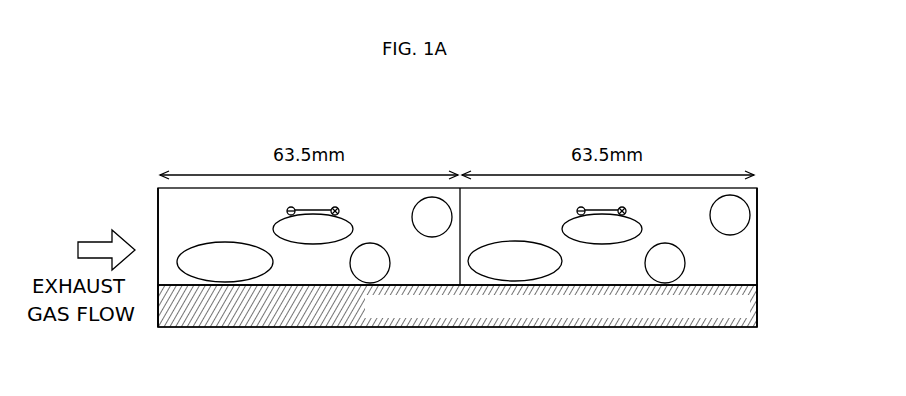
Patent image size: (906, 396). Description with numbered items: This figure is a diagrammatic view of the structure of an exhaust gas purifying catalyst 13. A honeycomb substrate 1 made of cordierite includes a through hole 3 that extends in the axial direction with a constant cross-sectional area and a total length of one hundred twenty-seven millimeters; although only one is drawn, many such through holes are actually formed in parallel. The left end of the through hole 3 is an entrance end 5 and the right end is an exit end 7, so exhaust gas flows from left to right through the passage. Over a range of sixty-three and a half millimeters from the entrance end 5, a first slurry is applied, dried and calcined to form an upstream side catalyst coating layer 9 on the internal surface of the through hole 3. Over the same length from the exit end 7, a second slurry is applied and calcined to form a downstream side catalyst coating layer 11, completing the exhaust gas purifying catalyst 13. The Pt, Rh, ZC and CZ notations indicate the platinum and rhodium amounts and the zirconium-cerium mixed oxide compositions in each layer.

The substrate 1 is at (757, 305).
The through hole 3 is at (735, 263).
The entrance end 5 is at (157, 218).
The exit end 7 is at (757, 205).
The upstream side catalyst coating layer 9 is at (207, 204).
The downstream side catalyst coating layer 11 is at (697, 205).
The exhaust gas purifying catalyst 13 is at (665, 116).